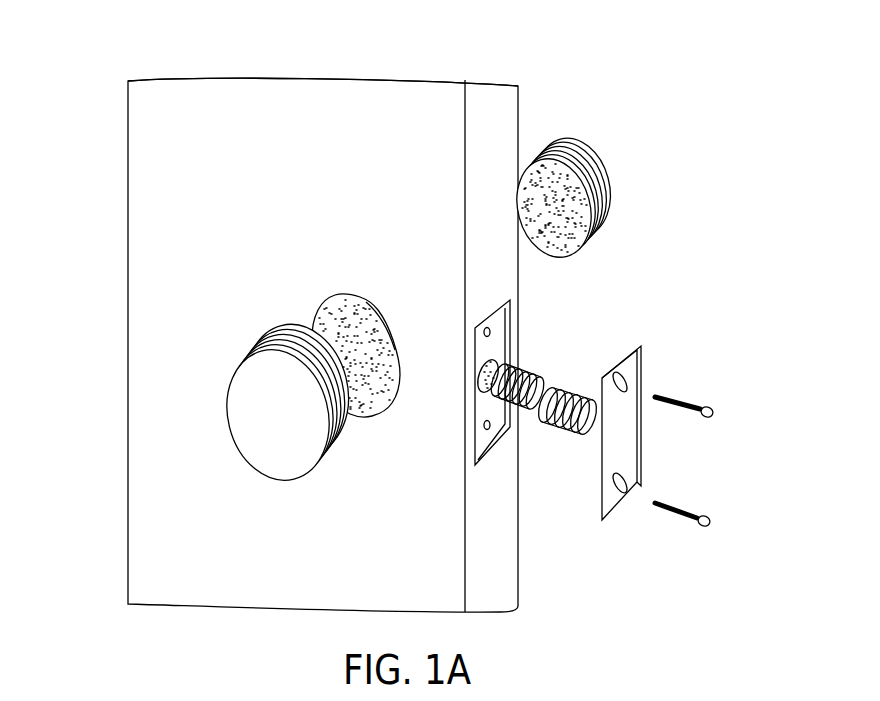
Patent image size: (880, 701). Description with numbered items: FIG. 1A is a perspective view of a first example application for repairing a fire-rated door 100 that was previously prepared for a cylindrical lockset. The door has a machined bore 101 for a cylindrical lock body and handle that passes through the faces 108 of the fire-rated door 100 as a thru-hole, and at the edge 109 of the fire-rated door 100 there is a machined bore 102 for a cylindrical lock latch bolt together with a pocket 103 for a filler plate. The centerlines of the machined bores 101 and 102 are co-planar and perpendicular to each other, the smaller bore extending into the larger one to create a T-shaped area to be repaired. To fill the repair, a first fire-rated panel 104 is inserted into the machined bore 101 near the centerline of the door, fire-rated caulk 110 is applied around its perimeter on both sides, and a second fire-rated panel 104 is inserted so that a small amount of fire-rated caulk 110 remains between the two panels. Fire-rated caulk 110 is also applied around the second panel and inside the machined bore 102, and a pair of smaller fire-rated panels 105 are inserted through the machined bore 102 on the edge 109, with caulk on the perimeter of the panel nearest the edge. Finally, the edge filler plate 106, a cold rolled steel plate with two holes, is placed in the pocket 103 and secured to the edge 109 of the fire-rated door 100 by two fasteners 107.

The fire-rated door 100 is at (118, 433).
The machined bore 101 is at (327, 292).
The machined bore 102 is at (492, 368).
The pocket 103 is at (495, 335).
The fire-rated panel 104 is at (238, 458).
The fire-rated panel 105 is at (522, 426).
The edge filler plate 106 is at (624, 342).
The fasteners 107 is at (714, 425).
The faces 108 is at (262, 118).
The edge 109 is at (487, 105).
The fire-rated caulk 110 is at (318, 322).